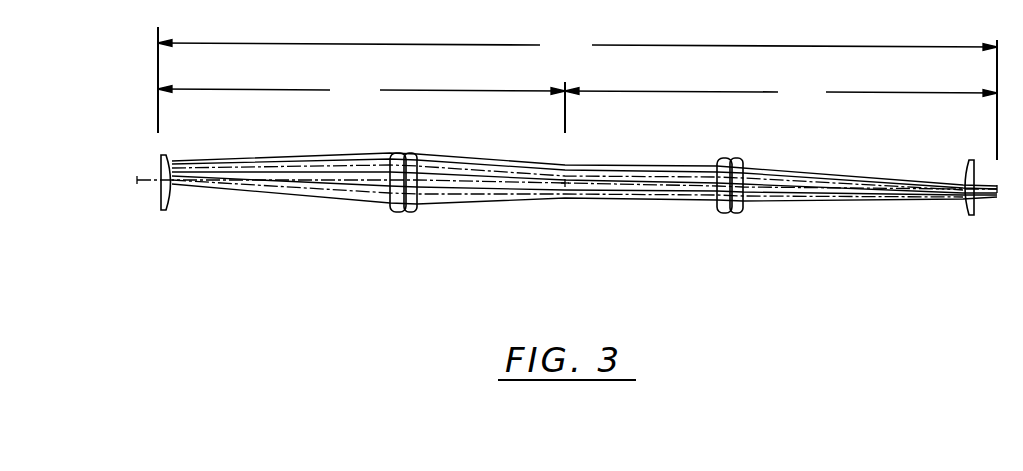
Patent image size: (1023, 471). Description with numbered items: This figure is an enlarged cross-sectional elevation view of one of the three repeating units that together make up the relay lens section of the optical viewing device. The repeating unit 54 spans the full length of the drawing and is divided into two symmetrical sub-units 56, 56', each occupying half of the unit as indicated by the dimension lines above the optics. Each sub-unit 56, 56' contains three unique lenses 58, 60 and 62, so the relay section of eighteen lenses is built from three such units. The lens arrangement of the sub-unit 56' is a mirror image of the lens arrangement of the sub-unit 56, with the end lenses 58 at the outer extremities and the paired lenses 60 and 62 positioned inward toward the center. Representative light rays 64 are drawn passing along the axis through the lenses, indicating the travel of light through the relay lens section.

The repeating unit 54 is at (577, 46).
The sub-unit 56 is at (781, 93).
The sub-unit 56' is at (361, 91).
The lens 58 is at (170, 208).
The lens 60 is at (395, 212).
The lens 62 is at (413, 212).
The light rays 64 is at (269, 204).